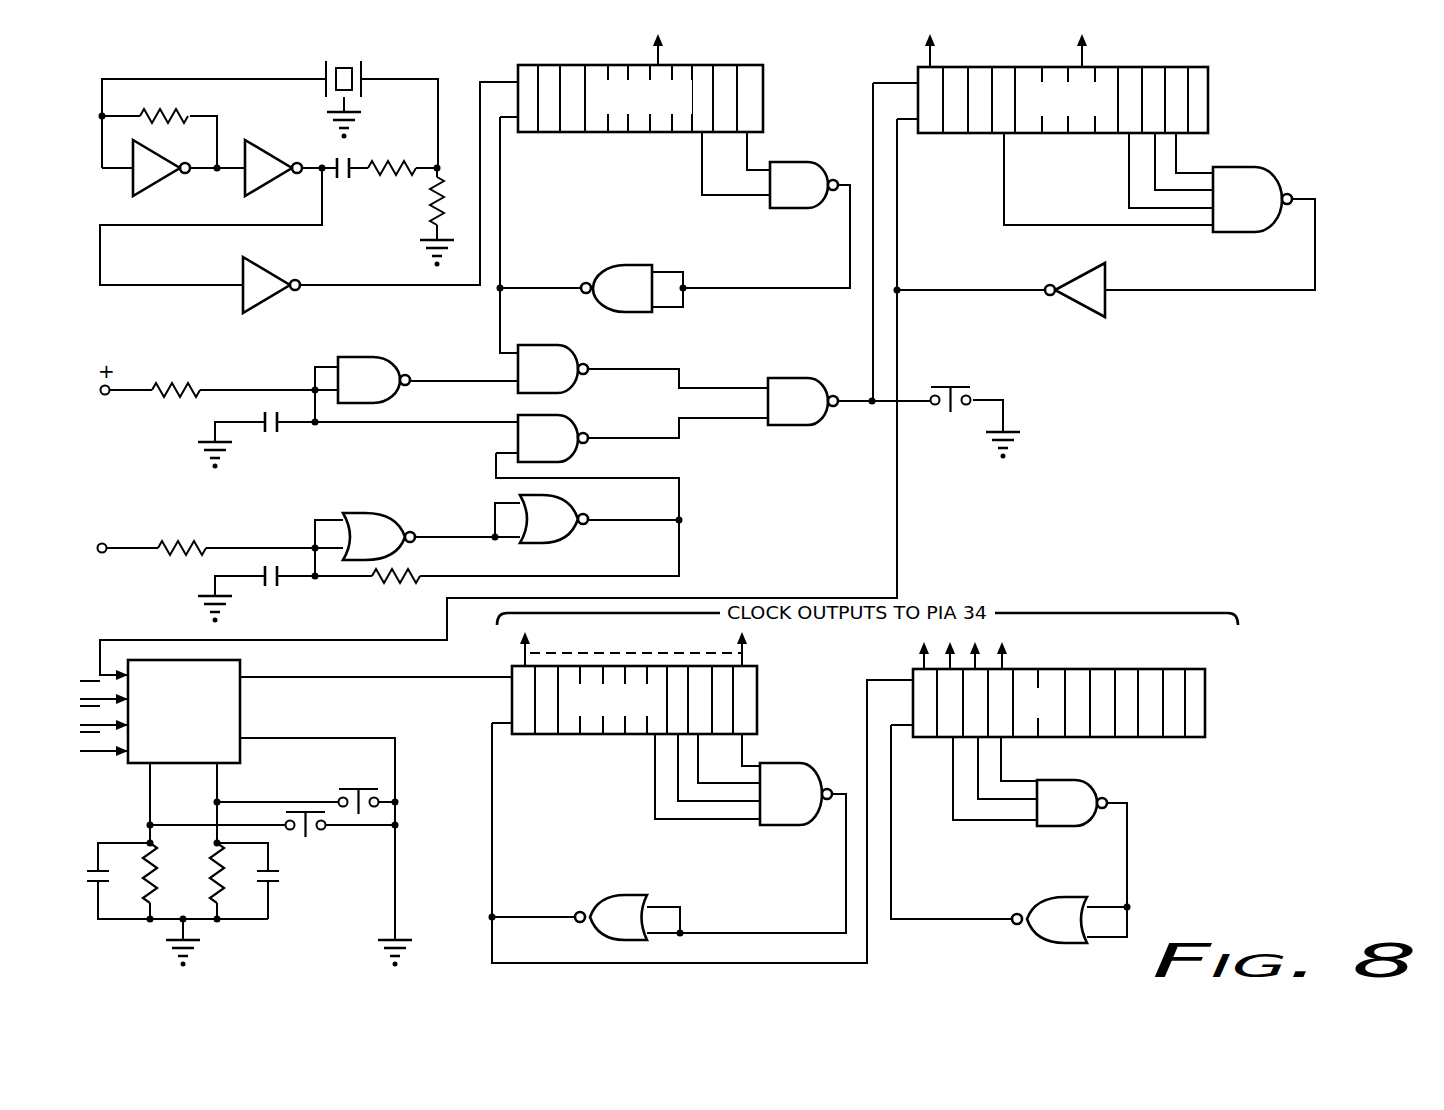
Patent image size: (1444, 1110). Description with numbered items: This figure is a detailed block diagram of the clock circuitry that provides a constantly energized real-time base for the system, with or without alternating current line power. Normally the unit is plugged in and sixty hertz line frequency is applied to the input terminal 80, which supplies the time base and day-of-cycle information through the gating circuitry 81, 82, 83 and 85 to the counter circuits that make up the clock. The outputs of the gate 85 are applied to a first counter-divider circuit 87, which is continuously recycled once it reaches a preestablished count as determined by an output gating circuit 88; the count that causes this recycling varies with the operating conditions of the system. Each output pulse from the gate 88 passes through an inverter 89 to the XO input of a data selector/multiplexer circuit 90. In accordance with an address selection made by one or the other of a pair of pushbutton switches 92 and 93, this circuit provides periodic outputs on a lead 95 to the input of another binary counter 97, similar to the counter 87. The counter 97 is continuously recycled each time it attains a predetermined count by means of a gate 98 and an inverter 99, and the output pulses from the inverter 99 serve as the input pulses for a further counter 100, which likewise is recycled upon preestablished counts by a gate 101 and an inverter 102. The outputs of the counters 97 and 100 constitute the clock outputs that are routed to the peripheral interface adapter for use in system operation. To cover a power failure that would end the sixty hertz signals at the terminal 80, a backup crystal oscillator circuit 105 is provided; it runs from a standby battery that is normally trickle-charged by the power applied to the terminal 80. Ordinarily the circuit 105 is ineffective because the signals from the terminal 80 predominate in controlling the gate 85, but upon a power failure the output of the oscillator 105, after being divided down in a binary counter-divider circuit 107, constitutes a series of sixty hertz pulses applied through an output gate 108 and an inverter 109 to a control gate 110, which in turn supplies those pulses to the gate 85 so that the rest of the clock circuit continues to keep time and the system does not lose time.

The input terminal 80 is at (104, 552).
The gating circuitry 81 is at (388, 515).
The gating circuitry 82 is at (567, 541).
The gating circuitry 83 is at (578, 455).
The gate 85 is at (792, 428).
The first counter-divider circuit 87 is at (955, 136).
The output gating circuit 88 is at (1235, 147).
The inverter 89 is at (1080, 253).
The data selector/multiplexer circuit 90 is at (240, 718).
The pushbutton switch 92 is at (370, 786).
The pushbutton switch 93 is at (306, 838).
The lead 95 is at (366, 676).
The binary counter 97 is at (575, 738).
The gate 98 is at (785, 828).
The inverter 99 is at (620, 892).
The counter 100 is at (1147, 742).
The gate 101 is at (1062, 830).
The inverter 102 is at (1063, 892).
The backup crystal oscillator circuit 105 is at (376, 246).
The binary counter-divider circuit 107 is at (612, 134).
The output gate 108 is at (792, 212).
The inverter 109 is at (630, 262).
The control gate 110 is at (585, 336).